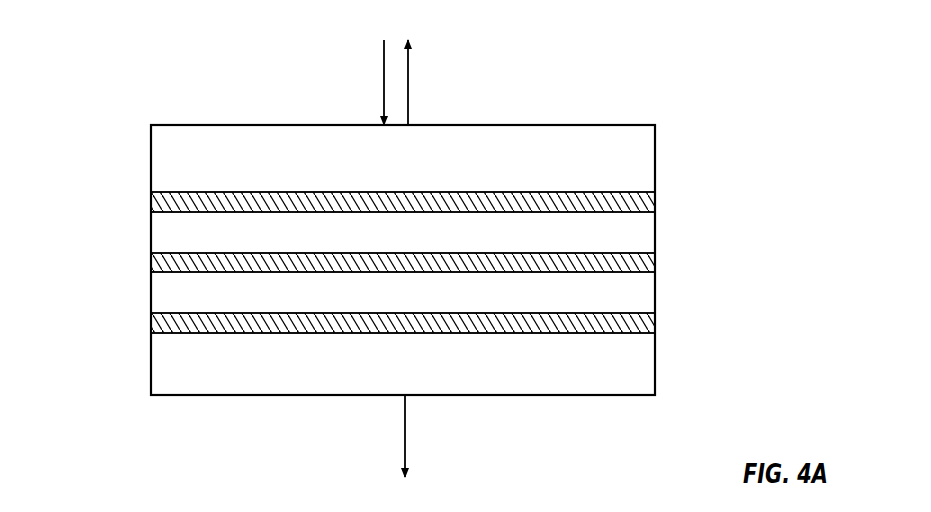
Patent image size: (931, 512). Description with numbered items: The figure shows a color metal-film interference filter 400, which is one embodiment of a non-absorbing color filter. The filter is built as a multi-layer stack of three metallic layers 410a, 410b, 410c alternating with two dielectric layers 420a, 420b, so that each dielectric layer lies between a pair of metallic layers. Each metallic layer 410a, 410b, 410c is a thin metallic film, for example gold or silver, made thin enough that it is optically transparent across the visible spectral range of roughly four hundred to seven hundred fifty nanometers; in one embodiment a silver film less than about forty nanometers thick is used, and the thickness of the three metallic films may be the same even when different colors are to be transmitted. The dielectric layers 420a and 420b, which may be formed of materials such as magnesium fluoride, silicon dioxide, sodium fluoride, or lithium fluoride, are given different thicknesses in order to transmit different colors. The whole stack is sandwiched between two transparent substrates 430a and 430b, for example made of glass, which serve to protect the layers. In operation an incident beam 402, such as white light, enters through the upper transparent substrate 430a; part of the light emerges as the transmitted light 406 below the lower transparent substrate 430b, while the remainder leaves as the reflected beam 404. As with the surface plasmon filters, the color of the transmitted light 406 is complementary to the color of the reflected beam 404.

The color metal-film interference filter 400 is at (397, 207).
The incident beam 402 is at (328, 76).
The reflected beam 404 is at (473, 76).
The transmitted light 406 is at (444, 436).
The metallic layer 410a is at (450, 190).
The metallic layer 410b is at (450, 251).
The metallic layer 410c is at (450, 309).
The dielectric layer 420a is at (424, 246).
The dielectric layer 420b is at (424, 303).
The transparent substrate 430a is at (357, 158).
The transparent substrate 430b is at (356, 361).